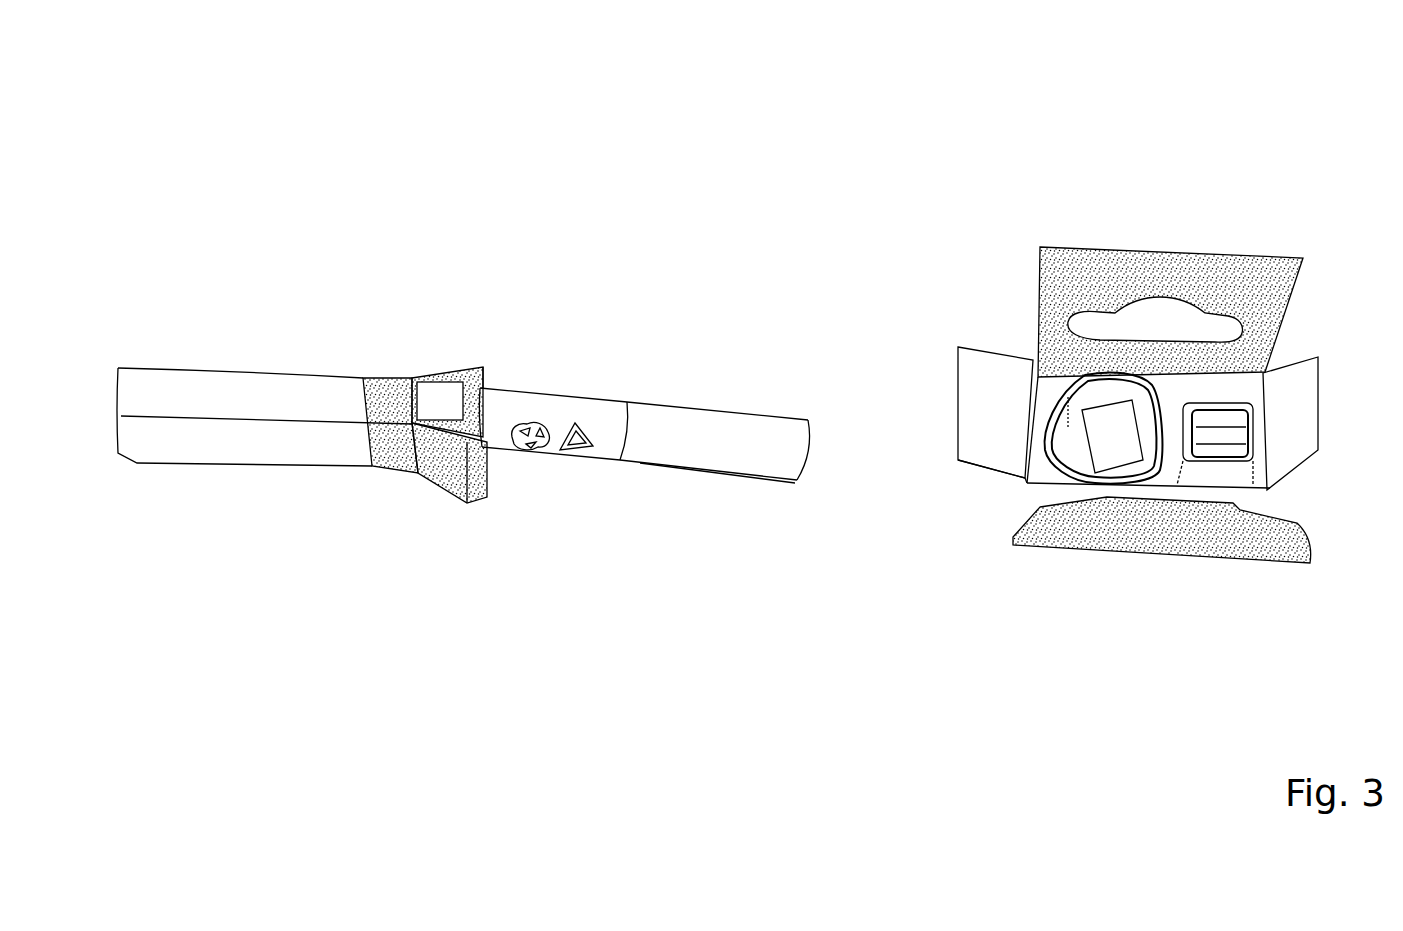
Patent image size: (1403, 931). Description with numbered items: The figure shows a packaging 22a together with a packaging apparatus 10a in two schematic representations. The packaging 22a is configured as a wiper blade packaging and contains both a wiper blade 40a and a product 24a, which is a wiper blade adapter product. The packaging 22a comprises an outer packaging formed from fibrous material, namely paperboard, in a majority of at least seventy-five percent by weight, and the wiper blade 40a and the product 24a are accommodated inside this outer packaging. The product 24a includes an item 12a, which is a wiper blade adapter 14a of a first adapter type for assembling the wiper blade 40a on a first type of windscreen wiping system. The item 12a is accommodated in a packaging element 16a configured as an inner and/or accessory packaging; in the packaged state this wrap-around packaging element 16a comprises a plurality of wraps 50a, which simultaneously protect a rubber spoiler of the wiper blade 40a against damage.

The packaging apparatus 10a is at (955, 262).
The item 12a is at (1144, 513).
The wiper blade adapter 14a is at (1123, 453).
The packaging element 16a is at (1053, 390).
The packaging 22a is at (415, 302).
The product 24a is at (732, 388).
The wiper blade 40a is at (1233, 452).
The wraps 50a is at (1040, 485).